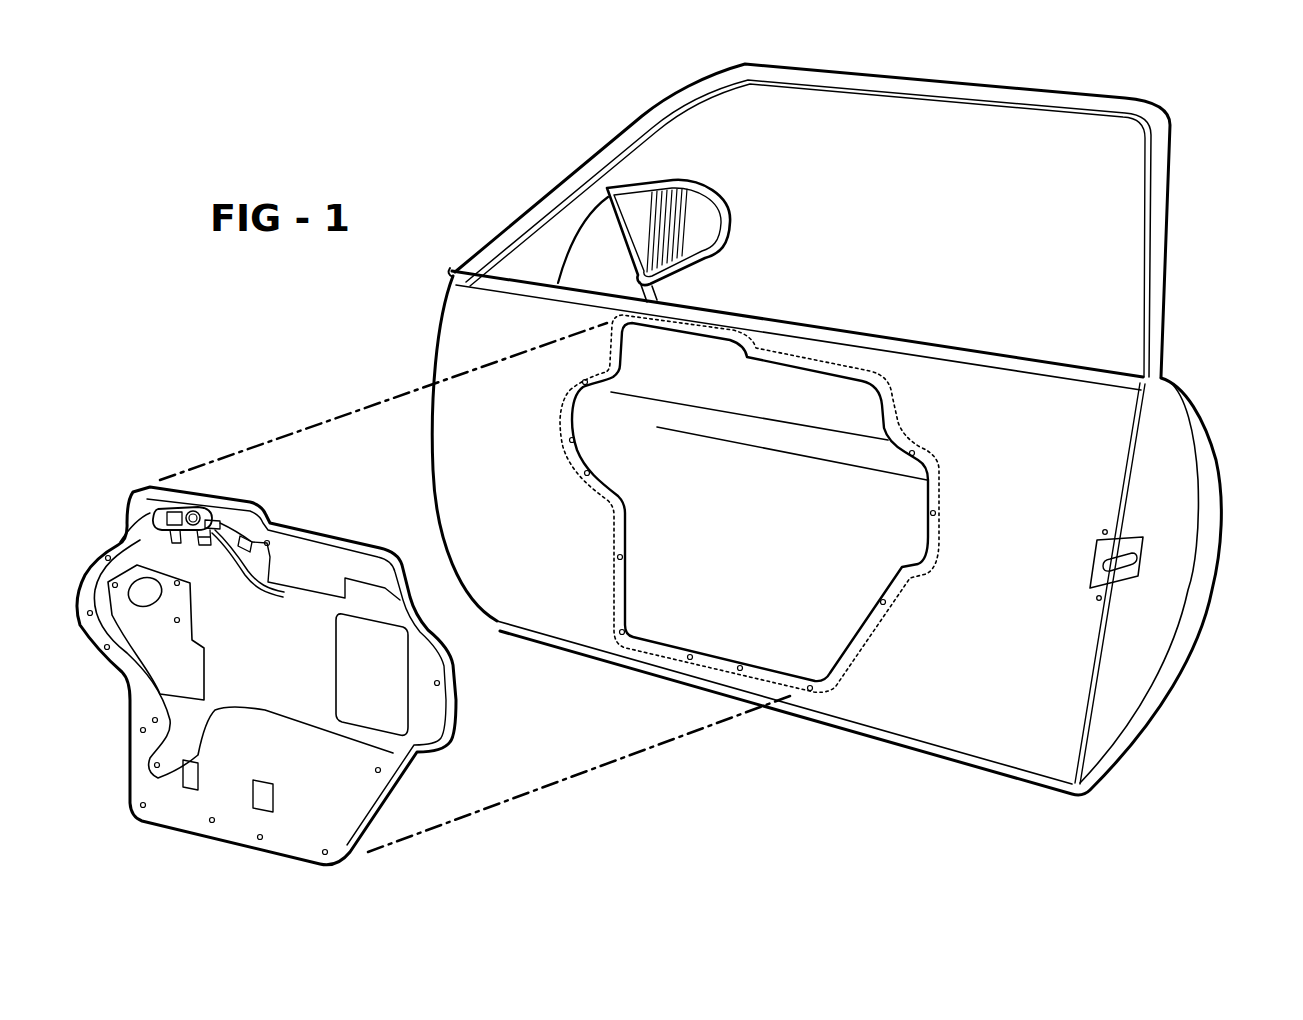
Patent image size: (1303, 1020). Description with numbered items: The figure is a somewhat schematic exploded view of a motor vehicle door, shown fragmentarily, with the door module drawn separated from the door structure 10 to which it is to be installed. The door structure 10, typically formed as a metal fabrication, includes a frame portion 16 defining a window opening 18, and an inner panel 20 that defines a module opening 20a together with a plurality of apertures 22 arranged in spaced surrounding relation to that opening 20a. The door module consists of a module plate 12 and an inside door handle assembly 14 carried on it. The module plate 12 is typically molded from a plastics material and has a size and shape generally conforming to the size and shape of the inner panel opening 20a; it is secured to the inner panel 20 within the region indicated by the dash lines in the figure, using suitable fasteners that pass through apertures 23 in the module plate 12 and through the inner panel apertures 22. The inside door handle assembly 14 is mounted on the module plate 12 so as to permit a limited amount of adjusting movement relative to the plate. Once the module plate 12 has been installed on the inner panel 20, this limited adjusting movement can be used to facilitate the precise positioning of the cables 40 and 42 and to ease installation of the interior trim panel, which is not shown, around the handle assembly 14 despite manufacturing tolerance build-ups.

The door structure 10 is at (1228, 461).
The module plate 12 is at (282, 621).
The inside door handle assembly 14 is at (153, 514).
The frame portion 16 is at (1175, 217).
The window opening 18 is at (1033, 154).
The inner panel 20 is at (906, 706).
The module opening 20a is at (790, 375).
The apertures 22 is at (584, 392).
The apertures 23 is at (210, 822).
The cable 40 is at (263, 603).
The cable 42 is at (247, 538).